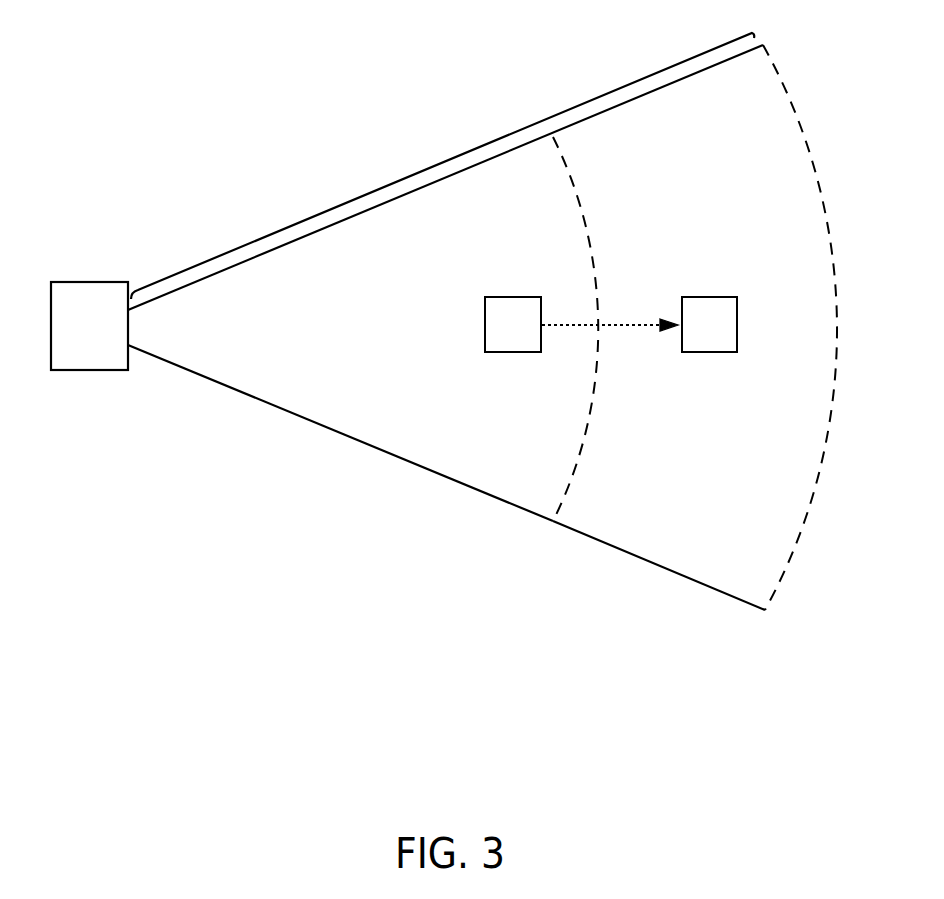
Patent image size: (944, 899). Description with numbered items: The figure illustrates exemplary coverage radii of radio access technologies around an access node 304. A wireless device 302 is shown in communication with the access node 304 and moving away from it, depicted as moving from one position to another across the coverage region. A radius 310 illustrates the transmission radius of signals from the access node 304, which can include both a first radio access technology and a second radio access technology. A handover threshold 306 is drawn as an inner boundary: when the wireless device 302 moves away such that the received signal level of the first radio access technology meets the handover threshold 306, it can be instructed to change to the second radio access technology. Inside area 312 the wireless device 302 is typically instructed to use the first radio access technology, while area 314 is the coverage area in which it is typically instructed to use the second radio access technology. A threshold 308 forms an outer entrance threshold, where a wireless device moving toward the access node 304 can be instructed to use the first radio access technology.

The wireless device 302 is at (611, 324).
The access node 304 is at (89, 326).
The handover threshold 306 is at (586, 190).
The entrance threshold 308 is at (816, 132).
The transmission radius 310 is at (452, 154).
The area 312 is at (334, 421).
The area 314 is at (699, 572).